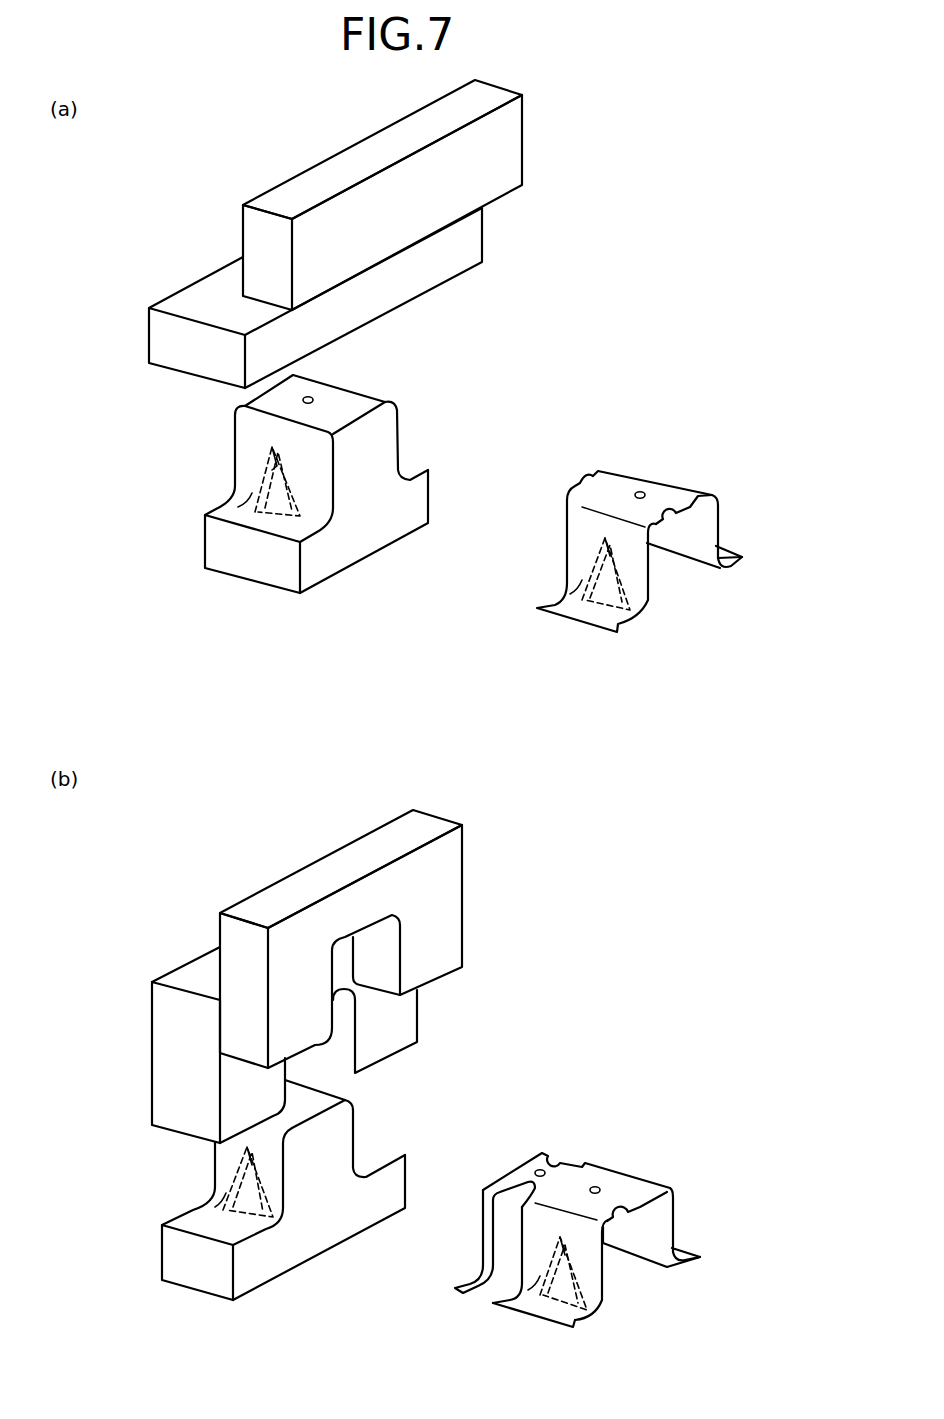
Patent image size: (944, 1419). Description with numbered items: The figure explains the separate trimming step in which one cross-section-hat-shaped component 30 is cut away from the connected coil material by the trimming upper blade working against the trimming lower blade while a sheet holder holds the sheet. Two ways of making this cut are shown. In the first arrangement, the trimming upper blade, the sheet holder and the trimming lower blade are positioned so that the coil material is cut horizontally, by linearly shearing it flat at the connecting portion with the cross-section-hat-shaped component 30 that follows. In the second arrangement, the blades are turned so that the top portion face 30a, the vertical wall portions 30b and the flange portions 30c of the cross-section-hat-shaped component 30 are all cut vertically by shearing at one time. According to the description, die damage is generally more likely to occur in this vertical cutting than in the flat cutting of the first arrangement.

The cross-section-hat-shaped component 30 is at (663, 482).
The top portion face 30a is at (623, 1173).
The vertical wall portion 30b is at (593, 1265).
The flange portion 30c is at (535, 1310).